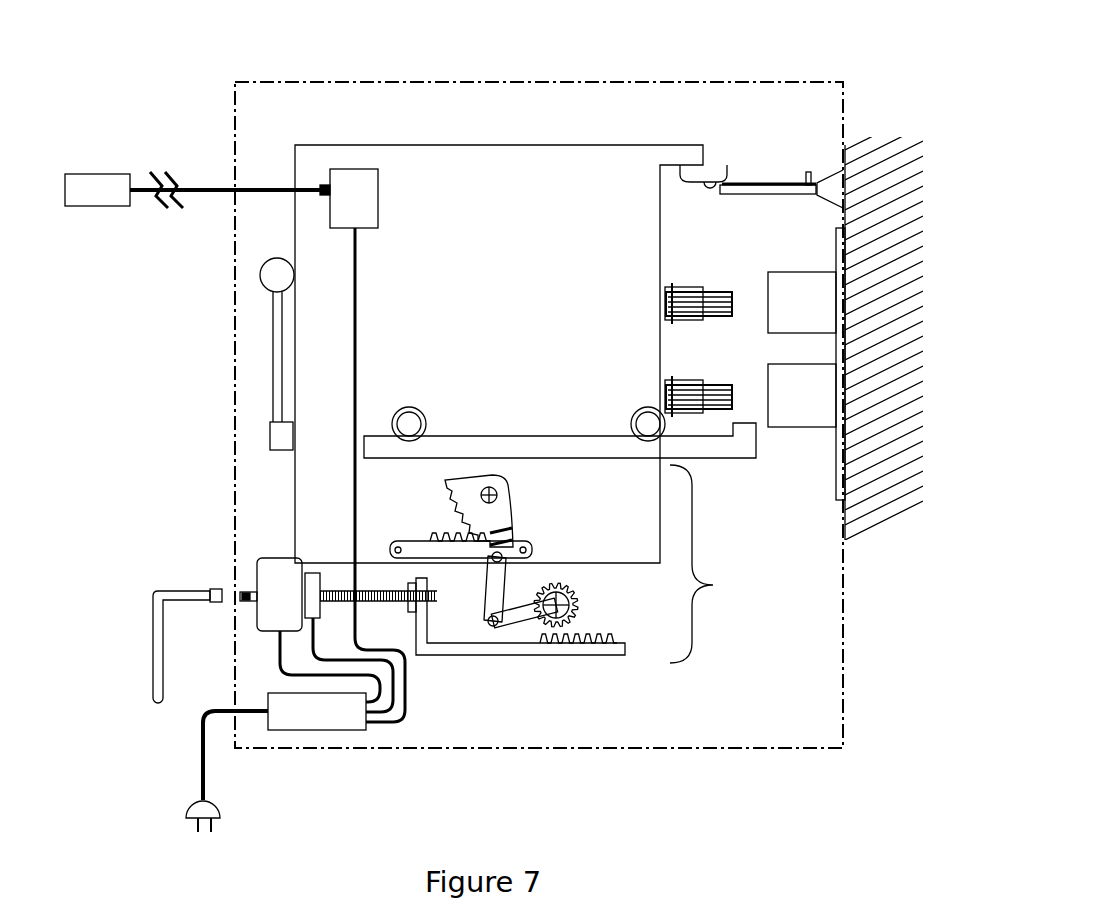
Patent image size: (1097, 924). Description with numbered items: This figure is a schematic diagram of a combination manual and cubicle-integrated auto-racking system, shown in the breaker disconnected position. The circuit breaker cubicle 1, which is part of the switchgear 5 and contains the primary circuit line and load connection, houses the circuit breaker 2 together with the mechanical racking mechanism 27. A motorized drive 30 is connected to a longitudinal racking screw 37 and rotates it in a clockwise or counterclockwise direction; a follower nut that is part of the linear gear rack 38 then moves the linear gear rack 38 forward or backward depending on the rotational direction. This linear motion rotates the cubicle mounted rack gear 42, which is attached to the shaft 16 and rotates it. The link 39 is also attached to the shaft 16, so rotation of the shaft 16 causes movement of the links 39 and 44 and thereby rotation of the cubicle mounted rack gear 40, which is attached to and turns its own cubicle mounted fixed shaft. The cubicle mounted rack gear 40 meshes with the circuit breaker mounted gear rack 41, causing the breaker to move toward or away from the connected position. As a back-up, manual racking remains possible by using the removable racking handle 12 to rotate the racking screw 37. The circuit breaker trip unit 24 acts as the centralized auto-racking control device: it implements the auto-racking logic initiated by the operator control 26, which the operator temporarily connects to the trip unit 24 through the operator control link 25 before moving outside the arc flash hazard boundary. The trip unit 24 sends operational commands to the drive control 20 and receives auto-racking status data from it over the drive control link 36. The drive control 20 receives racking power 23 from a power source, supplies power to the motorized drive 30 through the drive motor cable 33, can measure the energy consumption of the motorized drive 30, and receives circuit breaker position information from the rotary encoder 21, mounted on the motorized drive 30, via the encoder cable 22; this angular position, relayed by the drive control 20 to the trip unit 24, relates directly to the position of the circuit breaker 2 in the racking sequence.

The circuit breaker cubicle 1 is at (549, 82).
The circuit breaker 2 is at (454, 145).
The switchgear 5 is at (910, 262).
The removable racking handle 12 is at (167, 590).
The shaft 16 is at (569, 604).
The drive control 20 is at (307, 731).
The encoder 21 is at (313, 572).
The encoder cable 22 is at (385, 720).
The racking power 23 is at (200, 768).
The circuit breaker trip unit 24 is at (352, 169).
The operator control link 25 is at (195, 185).
The operator control 26 is at (88, 174).
The mechanical racking mechanism 27 is at (715, 564).
The motorized drive 30 is at (272, 558).
The drive motor cable 33 is at (280, 668).
The drive control link 36 is at (357, 284).
The racking screw 37 is at (382, 605).
The linear gear rack 38 is at (525, 655).
The link 39 is at (515, 603).
The cubicle mounted rack gear 40 is at (513, 505).
The circuit breaker mounted gear rack 41 is at (410, 540).
The cubicle mounted rack gear 42 is at (600, 607).
The link 44 is at (487, 588).